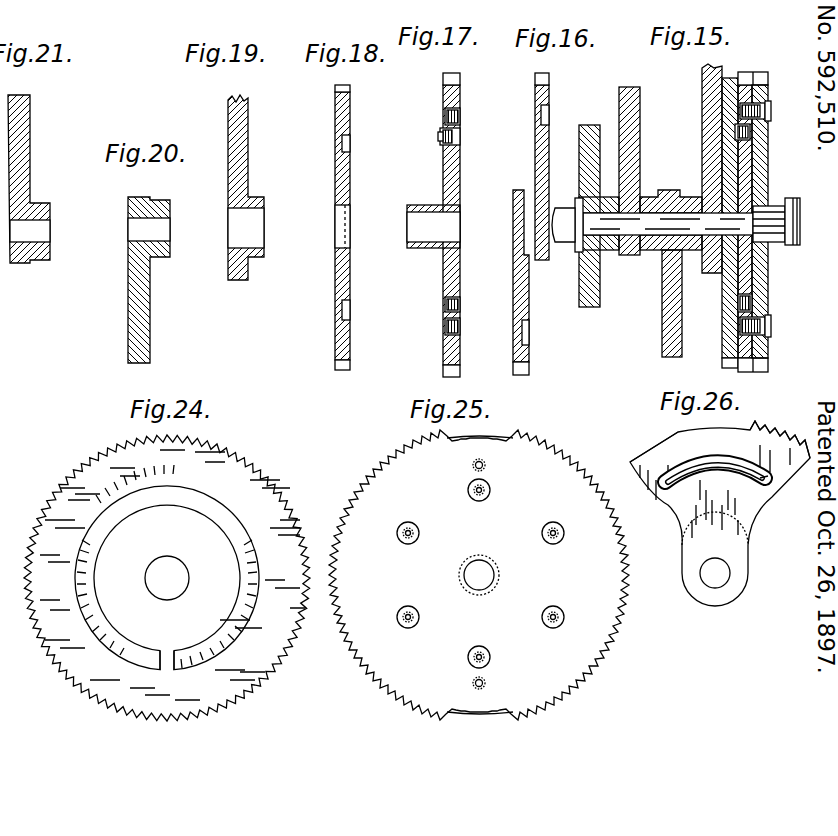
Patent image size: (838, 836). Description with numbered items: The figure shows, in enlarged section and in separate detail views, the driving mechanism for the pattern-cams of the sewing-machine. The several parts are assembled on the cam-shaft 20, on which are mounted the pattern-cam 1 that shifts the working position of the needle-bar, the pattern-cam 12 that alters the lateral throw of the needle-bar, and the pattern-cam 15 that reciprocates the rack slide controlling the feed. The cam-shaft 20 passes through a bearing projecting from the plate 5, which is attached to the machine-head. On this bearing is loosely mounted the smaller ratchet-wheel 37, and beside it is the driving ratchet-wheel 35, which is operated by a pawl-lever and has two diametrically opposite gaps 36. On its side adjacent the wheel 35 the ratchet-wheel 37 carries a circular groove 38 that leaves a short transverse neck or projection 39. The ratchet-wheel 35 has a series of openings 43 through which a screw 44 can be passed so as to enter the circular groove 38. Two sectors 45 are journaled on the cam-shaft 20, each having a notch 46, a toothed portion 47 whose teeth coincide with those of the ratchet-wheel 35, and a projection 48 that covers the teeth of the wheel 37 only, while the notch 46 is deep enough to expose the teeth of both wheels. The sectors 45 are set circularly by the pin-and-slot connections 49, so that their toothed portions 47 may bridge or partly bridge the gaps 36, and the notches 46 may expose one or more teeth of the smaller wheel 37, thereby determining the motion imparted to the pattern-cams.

In FIG. 21, the pattern-cam 1 is at (31, 153).
In FIG. 15, the pattern-cam 1 is at (636, 146).
In FIG. 19, the plate 5 is at (242, 145).
In FIG. 15, the plate 5 is at (703, 108).
In FIG. 15, the pattern-cam 12 is at (589, 127).
In FIG. 20, the pattern-cam 15 is at (152, 301).
In FIG. 15, the pattern-cam 15 is at (681, 312).
In FIG. 15, the cam-shaft 20 is at (648, 226).
In FIG. 15, the driving ratchet-wheel 35 is at (746, 80).
In FIG. 25, the driving ratchet-wheel 35 is at (415, 487).
In FIG. 25, the gaps 36 is at (486, 437).
In FIG. 18, the smaller ratchet-wheel 37 is at (341, 336).
In FIG. 15, the smaller ratchet-wheel 37 is at (728, 77).
In FIG. 24, the smaller ratchet-wheel 37 is at (226, 472).
In FIG. 18, the circular groove 38 is at (351, 147).
In FIG. 15, the circular groove 38 is at (736, 303).
In FIG. 24, the circular groove 38 is at (228, 527).
In FIG. 24, the transverse neck or projection 39 is at (164, 660).
In FIG. 17, the openings 43 is at (456, 307).
In FIG. 25, the openings 43 is at (554, 523).
In FIG. 17, the screw 44 is at (455, 142).
In FIG. 15, the screw 44 is at (750, 133).
In FIG. 26, the screw 44 is at (762, 478).
In FIG. 16, the sectors 45 is at (550, 97).
In FIG. 15, the sectors 45 is at (766, 95).
In FIG. 26, the sectors 45 is at (726, 512).
In FIG. 26, the notch 46 is at (718, 436).
In FIG. 26, the toothed portion 47 is at (776, 440).
In FIG. 26, the projection 48 is at (645, 452).
In FIG. 15, the pin-and-slot connections 49 is at (770, 110).